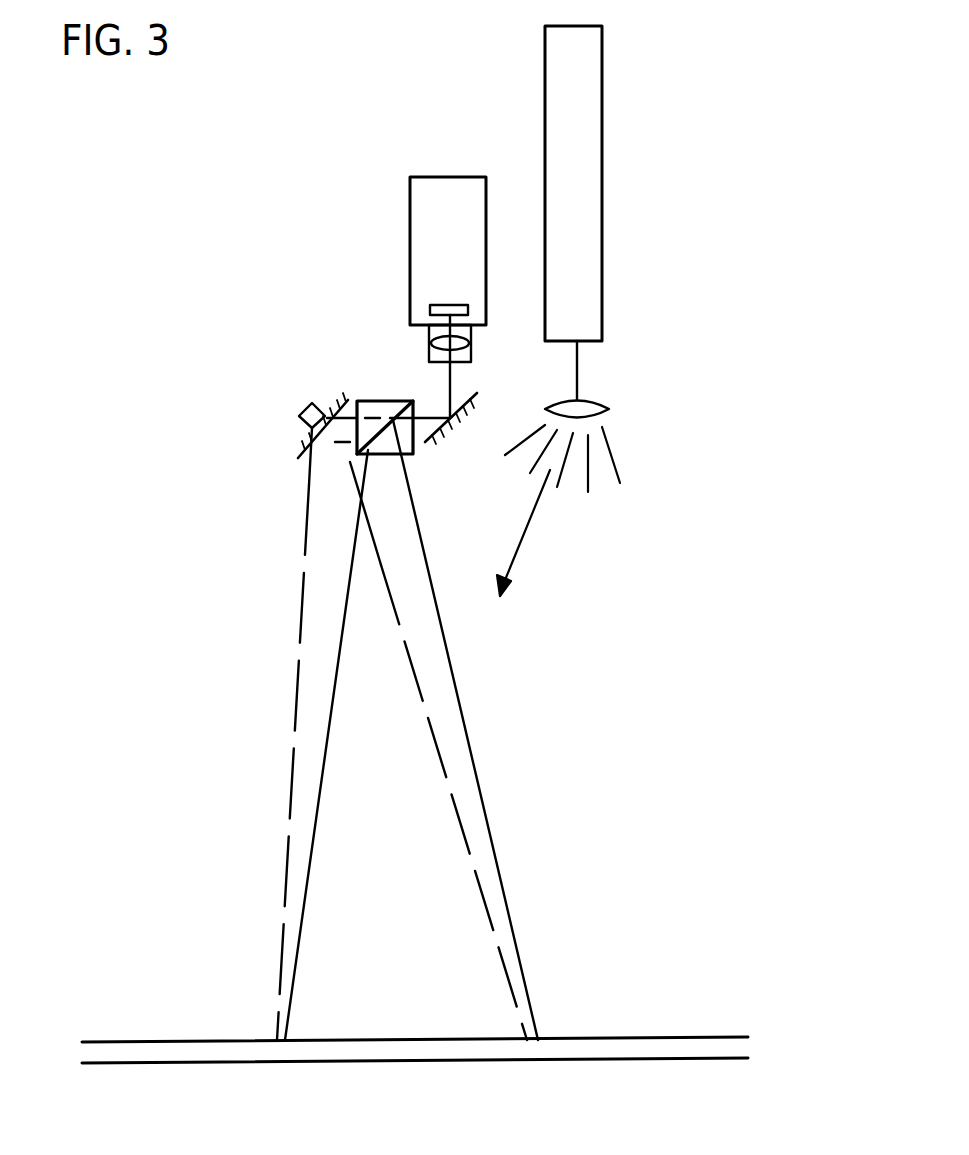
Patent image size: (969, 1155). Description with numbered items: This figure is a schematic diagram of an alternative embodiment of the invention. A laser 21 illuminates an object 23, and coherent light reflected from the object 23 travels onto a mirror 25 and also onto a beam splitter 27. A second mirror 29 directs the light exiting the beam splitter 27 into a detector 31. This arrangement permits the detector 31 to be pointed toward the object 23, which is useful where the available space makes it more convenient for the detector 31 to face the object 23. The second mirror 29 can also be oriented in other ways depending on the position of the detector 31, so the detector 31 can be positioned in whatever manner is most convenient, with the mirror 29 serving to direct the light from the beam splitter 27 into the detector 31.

The laser 21 is at (590, 108).
The object 23 is at (588, 1037).
The mirror 25 is at (304, 442).
The beam splitter 27 is at (393, 405).
The second mirror 29 is at (435, 440).
The detector 31 is at (425, 198).